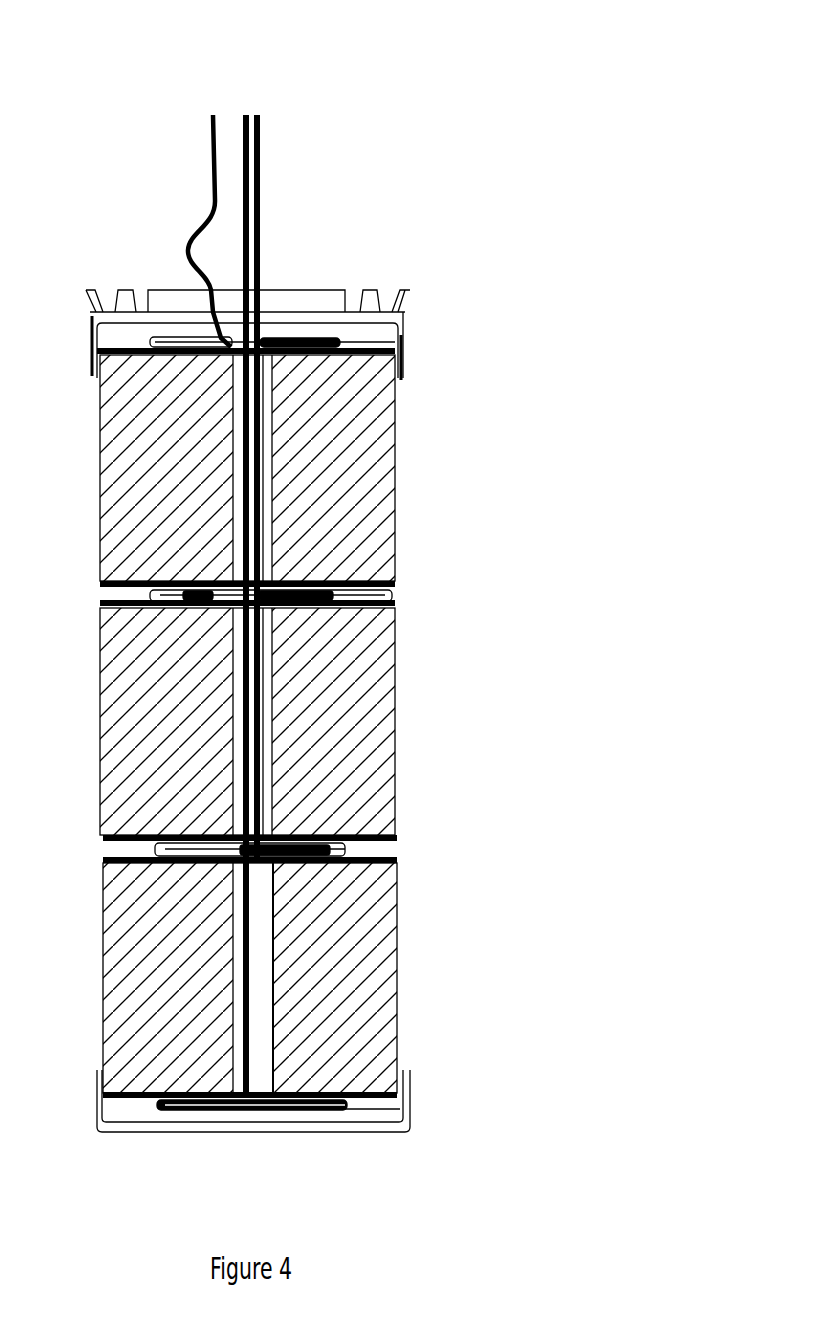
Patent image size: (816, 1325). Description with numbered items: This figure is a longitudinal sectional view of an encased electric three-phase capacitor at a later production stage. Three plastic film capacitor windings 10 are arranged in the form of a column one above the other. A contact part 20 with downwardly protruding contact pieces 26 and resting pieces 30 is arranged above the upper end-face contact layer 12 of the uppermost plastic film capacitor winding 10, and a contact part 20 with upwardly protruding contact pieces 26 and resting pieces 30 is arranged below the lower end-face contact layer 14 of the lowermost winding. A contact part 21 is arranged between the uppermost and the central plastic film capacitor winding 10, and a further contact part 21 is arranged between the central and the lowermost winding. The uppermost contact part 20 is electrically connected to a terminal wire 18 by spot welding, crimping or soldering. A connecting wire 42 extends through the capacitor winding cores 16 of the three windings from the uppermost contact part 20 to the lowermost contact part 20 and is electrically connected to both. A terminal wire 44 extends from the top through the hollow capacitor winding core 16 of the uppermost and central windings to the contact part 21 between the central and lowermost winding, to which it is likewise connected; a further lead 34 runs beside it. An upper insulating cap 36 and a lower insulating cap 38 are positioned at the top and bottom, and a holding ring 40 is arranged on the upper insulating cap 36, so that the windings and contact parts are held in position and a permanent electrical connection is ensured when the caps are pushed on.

The plastic film capacitor winding 10 is at (378, 520).
The upper end-face contact layer 12 is at (93, 358).
The lower end-face contact layer 14 is at (100, 584).
The capacitor winding core 16 is at (272, 478).
The terminal wire 18 is at (212, 112).
The contact part 20 is at (350, 347).
The contact part 21 is at (400, 610).
The contact piece 26 is at (317, 352).
The resting piece 30 is at (328, 357).
The conductor lead 34 is at (258, 112).
The upper insulating cap 36 is at (404, 318).
The lower insulating cap 38 is at (410, 1130).
The holding ring 40 is at (368, 288).
The connecting wire 42 is at (242, 962).
The terminal wire 44 is at (245, 112).